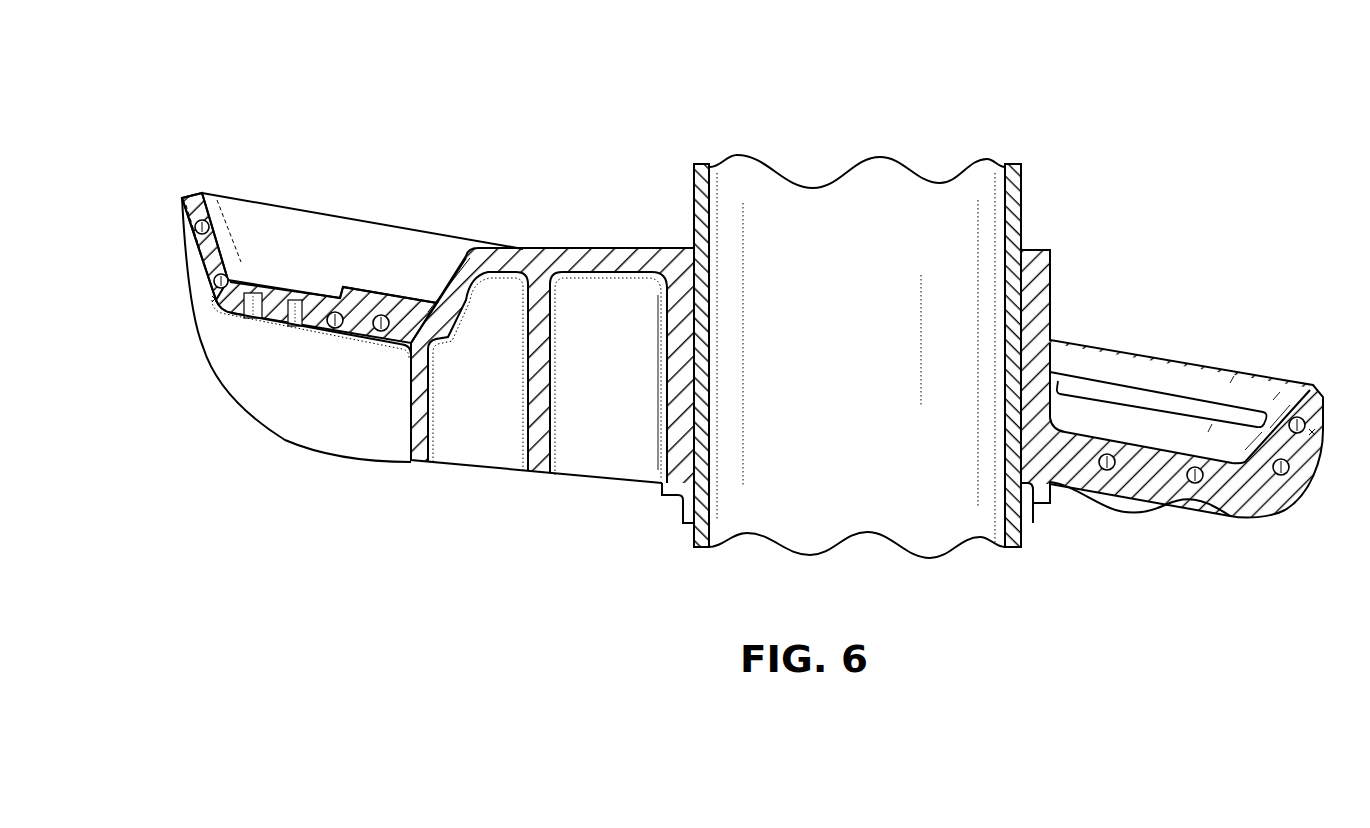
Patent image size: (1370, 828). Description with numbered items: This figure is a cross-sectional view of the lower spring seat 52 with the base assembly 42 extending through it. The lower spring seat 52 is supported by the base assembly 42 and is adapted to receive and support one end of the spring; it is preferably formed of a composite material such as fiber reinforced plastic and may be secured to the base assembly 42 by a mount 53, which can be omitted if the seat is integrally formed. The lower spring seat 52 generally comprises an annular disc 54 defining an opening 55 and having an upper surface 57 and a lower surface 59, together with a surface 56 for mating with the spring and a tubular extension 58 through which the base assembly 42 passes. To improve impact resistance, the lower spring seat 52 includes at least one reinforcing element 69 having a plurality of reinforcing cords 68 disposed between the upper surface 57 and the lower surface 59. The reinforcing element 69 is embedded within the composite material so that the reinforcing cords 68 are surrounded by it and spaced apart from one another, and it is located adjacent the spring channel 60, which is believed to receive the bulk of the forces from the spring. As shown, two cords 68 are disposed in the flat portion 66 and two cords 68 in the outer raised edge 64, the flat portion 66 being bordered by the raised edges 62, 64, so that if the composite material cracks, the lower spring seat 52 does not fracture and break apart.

The base assembly 42 is at (700, 213).
The lower spring seat 52 is at (323, 407).
The mount 53 is at (687, 512).
The annular disc 54 is at (493, 420).
The opening 55 is at (1022, 246).
The surface 56 is at (597, 248).
The upper surface 57 is at (387, 319).
The tubular extension 58 is at (690, 484).
The lower surface 59 is at (358, 330).
The spring channel 60 is at (398, 275).
The raised edge 62 is at (452, 287).
The outer raised edge 64 is at (183, 212).
The flat portion 66 is at (275, 293).
The reinforcing cords 68 is at (381, 315).
The reinforcing element 69 is at (221, 288).